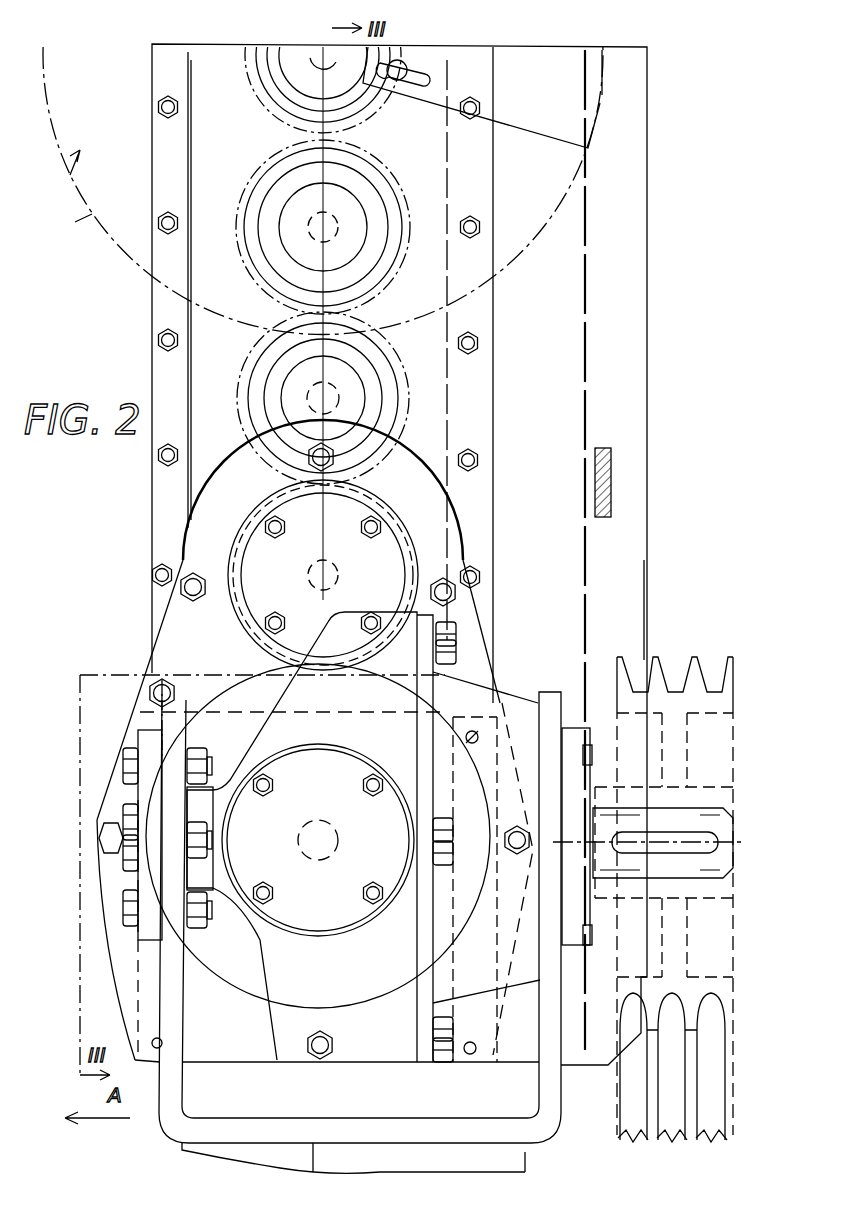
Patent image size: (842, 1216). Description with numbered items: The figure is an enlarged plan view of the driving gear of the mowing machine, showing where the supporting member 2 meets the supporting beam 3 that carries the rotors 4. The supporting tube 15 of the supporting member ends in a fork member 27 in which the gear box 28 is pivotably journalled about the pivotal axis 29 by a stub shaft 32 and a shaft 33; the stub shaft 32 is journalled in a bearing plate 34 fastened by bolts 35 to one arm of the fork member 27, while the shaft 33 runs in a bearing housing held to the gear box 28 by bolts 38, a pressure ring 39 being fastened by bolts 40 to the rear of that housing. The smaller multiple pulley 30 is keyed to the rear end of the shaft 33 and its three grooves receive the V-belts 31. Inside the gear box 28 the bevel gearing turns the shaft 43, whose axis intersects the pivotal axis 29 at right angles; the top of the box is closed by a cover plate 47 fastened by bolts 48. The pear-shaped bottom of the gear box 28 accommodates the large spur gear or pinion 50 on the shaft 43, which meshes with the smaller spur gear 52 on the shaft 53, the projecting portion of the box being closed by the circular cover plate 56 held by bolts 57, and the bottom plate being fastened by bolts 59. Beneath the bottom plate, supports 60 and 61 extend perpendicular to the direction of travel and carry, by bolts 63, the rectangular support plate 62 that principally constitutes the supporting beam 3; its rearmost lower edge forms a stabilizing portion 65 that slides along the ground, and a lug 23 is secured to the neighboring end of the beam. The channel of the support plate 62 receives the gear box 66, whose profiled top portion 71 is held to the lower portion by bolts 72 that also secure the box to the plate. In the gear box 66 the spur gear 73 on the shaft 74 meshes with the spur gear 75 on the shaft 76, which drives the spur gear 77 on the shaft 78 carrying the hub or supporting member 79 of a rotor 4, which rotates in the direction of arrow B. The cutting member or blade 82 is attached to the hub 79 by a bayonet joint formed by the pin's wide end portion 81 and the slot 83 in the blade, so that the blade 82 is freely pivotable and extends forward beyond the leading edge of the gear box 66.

The supporting member 2 is at (175, 1156).
The supporting beam 3 is at (662, 176).
The rotors 4 is at (118, 268).
The supporting tube 15 is at (520, 1165).
The lug 23 is at (611, 485).
The fork member 27 is at (418, 1118).
The gear box 28 is at (486, 631).
The pivotal axis 29 is at (742, 845).
The multiple pulley 30 is at (725, 712).
The V-belts 31 is at (680, 665).
The stub shaft 32 is at (110, 830).
The shaft 33 is at (690, 815).
The bearing plate 34 is at (150, 738).
The bolts 35 is at (122, 912).
The bolts 38 is at (458, 650).
The pressure ring 39 is at (577, 752).
The bolts 40 is at (598, 940).
The shaft 43 is at (320, 815).
The cover plate 47 is at (352, 768).
The bolts 48 is at (272, 788).
The spur gear or pinion 50 is at (238, 985).
The spur gear 52 is at (240, 548).
The shaft 53 is at (306, 576).
The cover plate 56 is at (258, 600).
The bolts 57 is at (368, 534).
The bolts 59 is at (195, 598).
The support 60 is at (405, 985).
The support 61 is at (105, 975).
The support plate 62 is at (662, 598).
The bolts 63 is at (517, 703).
The stabilizing portion 65 is at (560, 417).
The gear box 66 is at (493, 323).
The top portion 71 is at (205, 465).
The bolts 72 is at (476, 345).
The spur gear 73 is at (250, 404).
The shaft 74 is at (250, 362).
The spur gear 75 is at (250, 214).
The shaft 76 is at (260, 236).
The spur gear 77 is at (266, 110).
The shaft 78 is at (250, 72).
The hub or supporting member 79 is at (312, 58).
The wide end portion 81 is at (402, 58).
The cutting member or blade 82 is at (540, 100).
The slot 83 is at (420, 92).